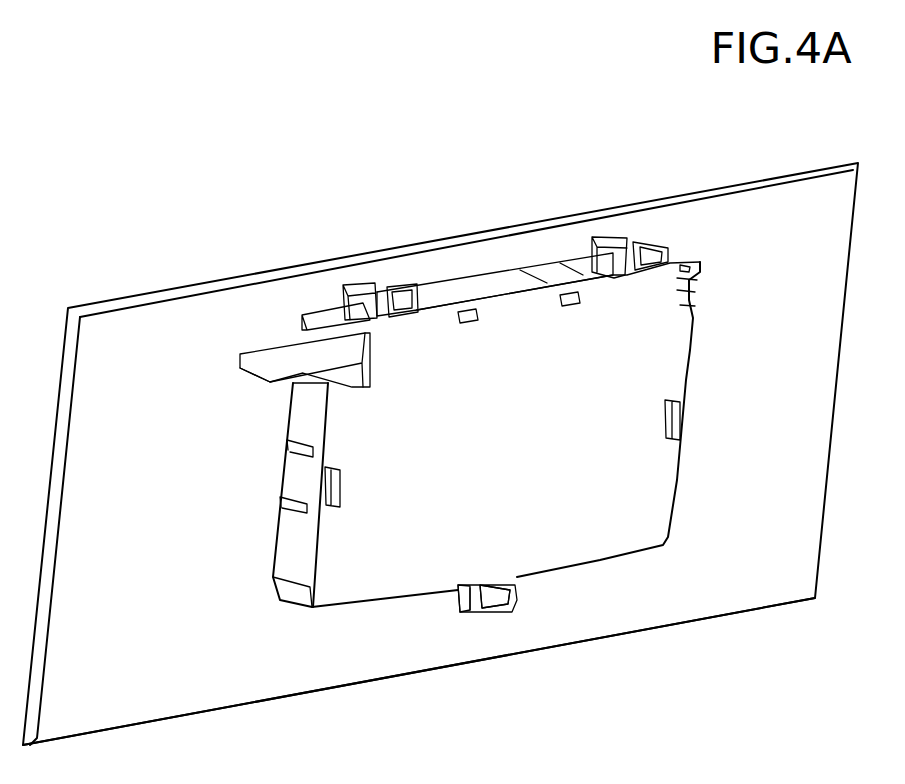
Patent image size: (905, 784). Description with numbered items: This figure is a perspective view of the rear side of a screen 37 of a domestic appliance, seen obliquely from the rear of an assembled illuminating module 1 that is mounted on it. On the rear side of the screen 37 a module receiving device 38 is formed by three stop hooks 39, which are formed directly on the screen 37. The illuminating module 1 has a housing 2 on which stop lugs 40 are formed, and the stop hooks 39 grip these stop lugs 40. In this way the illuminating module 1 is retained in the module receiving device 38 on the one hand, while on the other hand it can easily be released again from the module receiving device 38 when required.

The illuminating module 1 is at (513, 465).
The housing 2 is at (657, 527).
The screen 37 is at (150, 357).
The module receiving device 38 is at (497, 260).
The stop hooks 39 is at (353, 290).
The stop lugs 40 is at (396, 288).